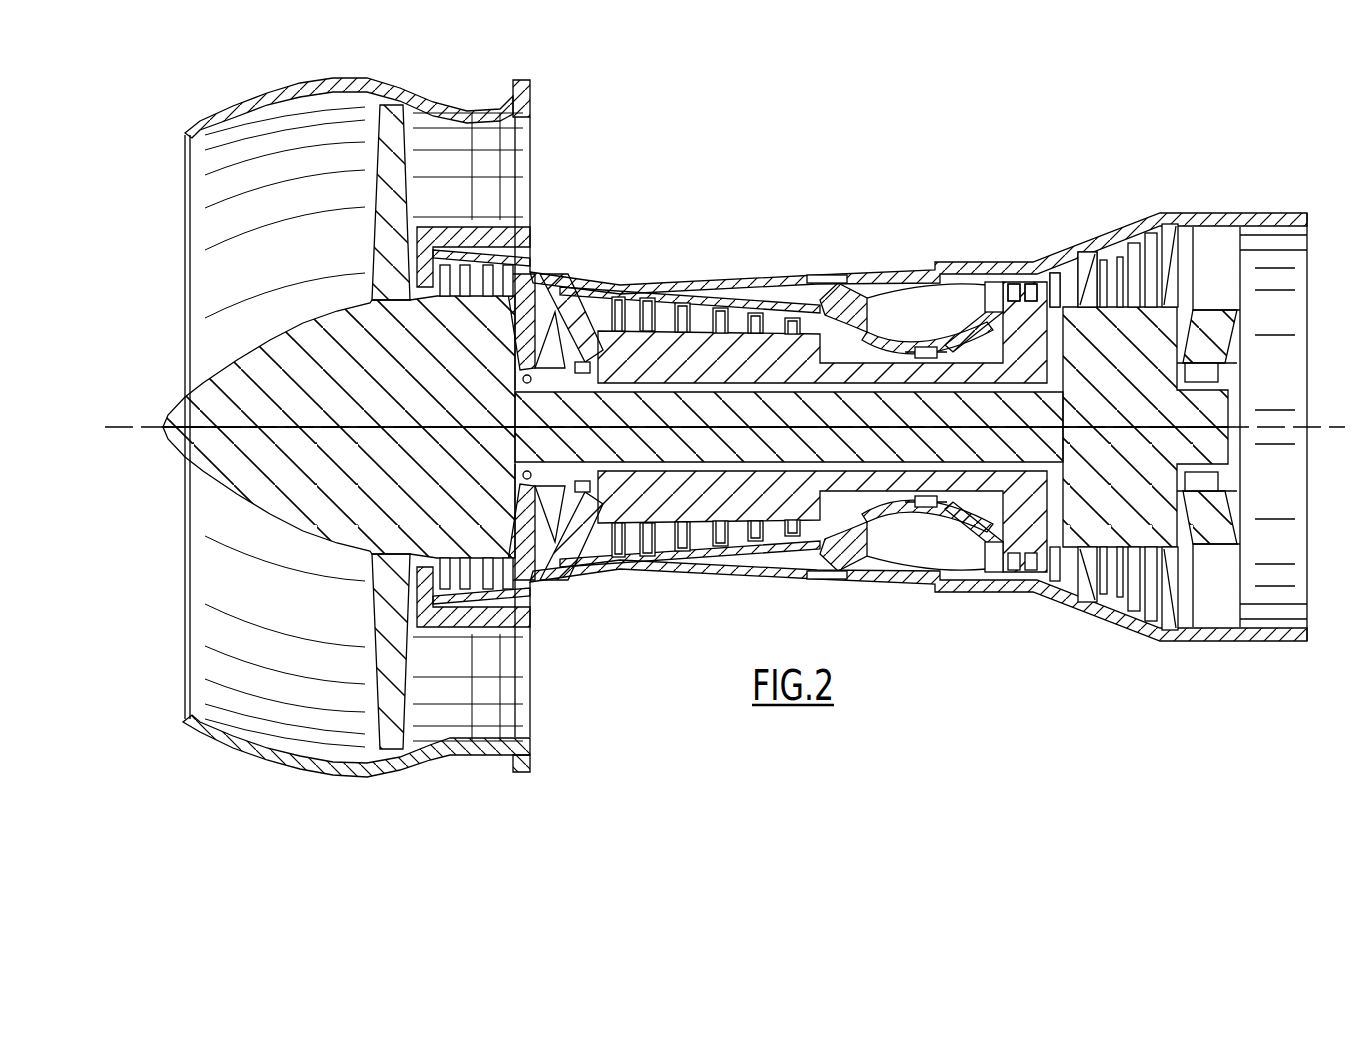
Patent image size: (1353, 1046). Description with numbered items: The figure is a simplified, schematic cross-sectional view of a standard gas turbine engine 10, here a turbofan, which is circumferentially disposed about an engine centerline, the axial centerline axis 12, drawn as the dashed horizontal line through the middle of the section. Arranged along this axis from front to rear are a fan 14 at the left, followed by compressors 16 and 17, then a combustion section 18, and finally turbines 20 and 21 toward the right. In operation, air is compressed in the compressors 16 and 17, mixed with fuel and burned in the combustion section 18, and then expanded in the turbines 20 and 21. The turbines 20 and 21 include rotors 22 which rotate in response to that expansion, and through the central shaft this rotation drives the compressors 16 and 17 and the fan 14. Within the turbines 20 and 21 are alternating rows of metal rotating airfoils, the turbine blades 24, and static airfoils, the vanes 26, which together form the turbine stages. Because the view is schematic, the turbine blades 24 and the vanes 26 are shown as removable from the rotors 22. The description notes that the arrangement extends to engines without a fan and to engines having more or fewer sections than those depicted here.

The gas turbine engine 10 is at (1093, 146).
The axial centerline axis 12 is at (125, 427).
The fan 14 is at (385, 207).
The compressor 16 is at (500, 277).
The compressor 17 is at (637, 290).
The combustion section 18 is at (908, 312).
The turbine 20 is at (1005, 293).
The turbine 21 is at (1072, 285).
The rotor 22 is at (1013, 323).
The turbine blade 24 is at (1037, 290).
The vane 26 is at (1018, 283).